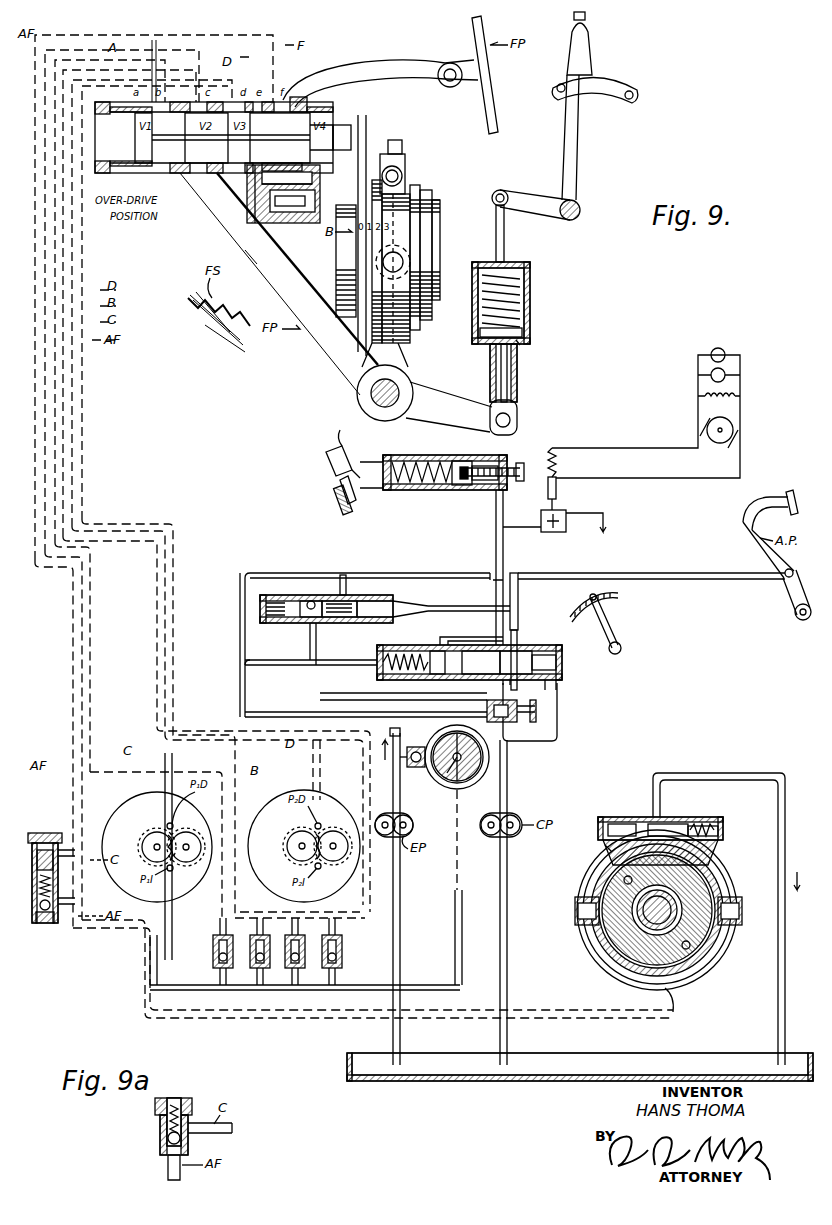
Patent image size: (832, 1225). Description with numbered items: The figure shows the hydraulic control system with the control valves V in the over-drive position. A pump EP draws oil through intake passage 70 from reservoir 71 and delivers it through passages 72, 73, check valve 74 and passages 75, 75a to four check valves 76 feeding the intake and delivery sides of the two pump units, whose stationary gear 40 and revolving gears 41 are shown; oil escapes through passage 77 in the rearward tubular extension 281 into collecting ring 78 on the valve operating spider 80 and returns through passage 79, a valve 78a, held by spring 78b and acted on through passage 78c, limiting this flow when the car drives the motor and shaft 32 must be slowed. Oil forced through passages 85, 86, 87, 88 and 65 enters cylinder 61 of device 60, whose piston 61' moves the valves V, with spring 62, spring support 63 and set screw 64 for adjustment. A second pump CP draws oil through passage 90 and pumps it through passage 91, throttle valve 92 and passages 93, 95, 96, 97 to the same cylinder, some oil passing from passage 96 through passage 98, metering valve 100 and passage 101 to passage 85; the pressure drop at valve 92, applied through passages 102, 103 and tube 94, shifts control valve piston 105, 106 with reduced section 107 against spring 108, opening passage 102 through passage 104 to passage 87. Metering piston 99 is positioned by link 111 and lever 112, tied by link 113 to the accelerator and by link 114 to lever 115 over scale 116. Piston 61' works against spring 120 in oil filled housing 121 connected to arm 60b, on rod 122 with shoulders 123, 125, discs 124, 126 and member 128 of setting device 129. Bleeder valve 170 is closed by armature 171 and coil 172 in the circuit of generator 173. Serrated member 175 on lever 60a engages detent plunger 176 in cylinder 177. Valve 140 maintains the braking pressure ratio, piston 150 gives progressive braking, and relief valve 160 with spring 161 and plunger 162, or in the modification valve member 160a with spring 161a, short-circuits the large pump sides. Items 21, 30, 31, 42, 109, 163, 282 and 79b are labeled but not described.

In FIG. 9, the piston valve 140 is at (296, 224).
In FIG. 9, the piston 150 is at (350, 206).
In FIG. 9, the passage 79 is at (402, 146).
In FIG. 9, the valve operating spider 80 is at (362, 163).
In FIG. 9, the lever 60a is at (370, 421).
In FIG. 9, the arm 60b is at (432, 388).
In FIG. 9, the setting device 129 is at (592, 44).
In FIG. 9, the member 128 is at (532, 195).
In FIG. 9, the second spaced shoulder 125 is at (505, 255).
In FIG. 9, the second disc 126 is at (530, 275).
In FIG. 9, the oil filled housing 121 is at (530, 305).
In FIG. 9, the spring 120 is at (524, 330).
In FIG. 9, the disc 124 is at (522, 342).
In FIG. 9, the rod 122 is at (518, 355).
In FIG. 9, the shoulder 123 is at (518, 372).
In FIG. 9, the fluid pressure actuated device 60 is at (408, 505).
In FIG. 9, the spring 62 is at (430, 470).
In FIG. 9, the cylinder 61 is at (450, 485).
In FIG. 9, the piston 61' is at (426, 485).
In FIG. 9, the spring support 63 is at (470, 490).
In FIG. 9, the adjustment device 64 is at (520, 464).
In FIG. 9, the passage 65 is at (503, 502).
In FIG. 9, the serrated member 175 is at (328, 464).
In FIG. 9, the spring pressed detent plunger 176 is at (352, 500).
In FIG. 9, the stationary cylinder 177 is at (336, 508).
In FIG. 9, the speed controlled bleeder valve 170 is at (554, 534).
In FIG. 9, the armature 171 is at (557, 491).
In FIG. 9, the coil 172 is at (557, 463).
In FIG. 9, the generator 173 is at (733, 425).
In FIG. 9, the link 113 is at (558, 572).
In FIG. 9, the passage 96 is at (276, 572).
In FIG. 9, the passage 97 is at (422, 572).
In FIG. 9, the passage 95 is at (240, 604).
In FIG. 9, the passage 98 is at (347, 587).
In FIG. 9, the piston valve 99 is at (395, 604).
In FIG. 9, the link 111 is at (462, 604).
In FIG. 9, the metering valve 100 is at (303, 618).
In FIG. 9, the passage 101 is at (318, 639).
In FIG. 9, the connecting tube 94 is at (270, 660).
In FIG. 9, the passage 93 is at (420, 712).
In FIG. 9, the control valve piston 105 is at (505, 650).
In FIG. 9, the spring 108 is at (360, 670).
In FIG. 9, the reduced section 107 is at (440, 650).
In FIG. 9, the passage 86 is at (452, 644).
In FIG. 9, the piston valve portion 106 is at (532, 662).
In FIG. 9, the valve stem 109 is at (556, 667).
In FIG. 9, the passage 103 is at (556, 686).
In FIG. 9, the passage 104 is at (505, 690).
In FIG. 9, the passage 102 is at (558, 712).
In FIG. 9, the passage 85 is at (488, 710).
In FIG. 9, the adjustable throttle valve 92 is at (532, 722).
In FIG. 9, the lever 112 is at (518, 597).
In FIG. 9, the link 114 is at (533, 645).
In FIG. 9, the indicating scale 116 is at (595, 596).
In FIG. 9, the lever 115 is at (606, 656).
In FIG. 9, the passage 88 is at (503, 568).
In FIG. 9, the passage 87 is at (503, 592).
In FIG. 9, the passage 73 is at (400, 733).
In FIG. 9, the intake passage 70 is at (401, 915).
In FIG. 9, the check valve 74 is at (414, 768).
In FIG. 9, the passage 75 is at (450, 770).
In FIG. 9, the shaft 21 is at (462, 768).
In FIG. 9, the passage 75a is at (457, 888).
In FIG. 9, the passage 72 is at (403, 808).
In FIG. 9, the passage 91 is at (507, 783).
In FIG. 9, the passage 90 is at (507, 907).
In FIG. 9, the pump 282 is at (522, 816).
In FIG. 9, the collecting ring 78 is at (698, 983).
In FIG. 9, the rearward tubular extension 281 is at (703, 900).
In FIG. 9, the shaft 32 is at (640, 918).
In FIG. 9, the shaft 42 is at (640, 930).
In FIG. 9, the passage 77 is at (622, 878).
In FIG. 9, the valve 78a is at (608, 810).
In FIG. 9, the spring 78b is at (700, 817).
In FIG. 9, the passage 78c is at (610, 854).
In FIG. 9, the pipe 79b is at (780, 957).
In FIG. 9, the pump gear 30 is at (150, 845).
In FIG. 9, the pump gear 31 is at (190, 860).
In FIG. 9, the stationary pump gear 40 is at (297, 832).
In FIG. 9, the pump gears 41 is at (334, 832).
In FIG. 9, the check valves 76 is at (344, 971).
In FIG. 9, the plunger 162 is at (44, 832).
In FIG. 9, the check valve 160 is at (50, 912).
In FIG. 9, the spring 161 is at (33, 915).
In FIG. 9, the ball 163 is at (60, 860).
In FIG. 9, the reservoir 71 is at (550, 1070).
In FIG. 9A, the valve member 160a is at (165, 1138).
In FIG. 9A, the spring 161a is at (175, 1100).